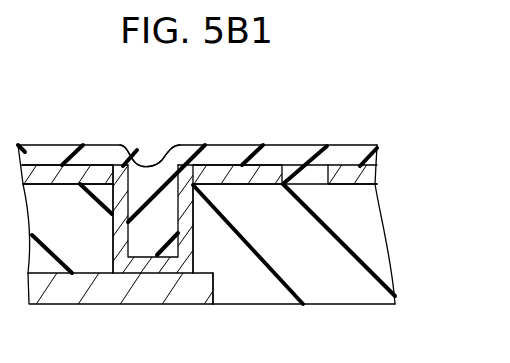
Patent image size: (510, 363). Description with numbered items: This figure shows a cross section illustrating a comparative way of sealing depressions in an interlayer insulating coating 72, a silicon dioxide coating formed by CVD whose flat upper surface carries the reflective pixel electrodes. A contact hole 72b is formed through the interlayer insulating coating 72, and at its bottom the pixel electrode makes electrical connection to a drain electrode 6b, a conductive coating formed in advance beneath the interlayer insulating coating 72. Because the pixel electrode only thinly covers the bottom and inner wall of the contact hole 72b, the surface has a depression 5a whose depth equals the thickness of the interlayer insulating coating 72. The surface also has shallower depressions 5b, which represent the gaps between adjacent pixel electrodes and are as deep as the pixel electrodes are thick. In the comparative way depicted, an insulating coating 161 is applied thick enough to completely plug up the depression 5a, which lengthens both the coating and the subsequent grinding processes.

The interlayer insulating coating 72 is at (385, 243).
The contact hole 72b is at (115, 198).
The depression 5b is at (281, 178).
The insulating coating 161 is at (338, 157).
The depression 5a is at (165, 228).
The drain electrode 6b is at (213, 283).